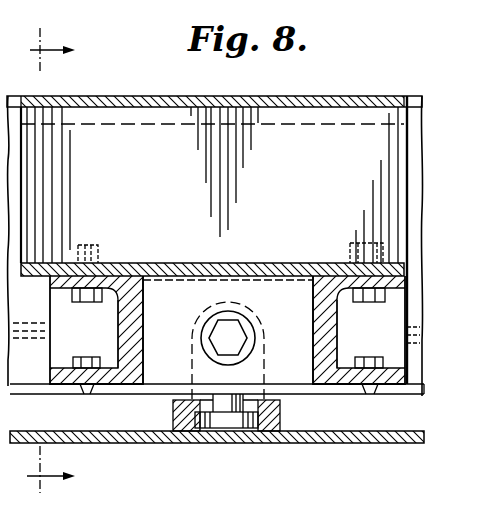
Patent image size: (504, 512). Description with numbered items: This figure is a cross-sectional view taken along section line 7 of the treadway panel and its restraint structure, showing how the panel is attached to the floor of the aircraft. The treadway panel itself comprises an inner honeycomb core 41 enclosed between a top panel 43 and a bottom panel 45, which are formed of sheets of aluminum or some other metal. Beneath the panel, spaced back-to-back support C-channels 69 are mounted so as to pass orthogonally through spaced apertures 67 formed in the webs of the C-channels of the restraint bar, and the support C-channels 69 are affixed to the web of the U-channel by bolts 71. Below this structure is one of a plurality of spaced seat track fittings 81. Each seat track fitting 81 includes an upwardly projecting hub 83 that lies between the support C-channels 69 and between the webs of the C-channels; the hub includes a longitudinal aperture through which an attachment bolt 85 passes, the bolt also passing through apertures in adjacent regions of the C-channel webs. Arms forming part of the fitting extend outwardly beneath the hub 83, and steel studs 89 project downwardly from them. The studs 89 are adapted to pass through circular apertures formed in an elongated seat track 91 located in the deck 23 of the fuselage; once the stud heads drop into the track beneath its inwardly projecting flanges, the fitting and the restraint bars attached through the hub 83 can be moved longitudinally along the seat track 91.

The section line 7- 7 is at (51, 263).
The deck 23 is at (88, 431).
The inner honeycomb core 41 is at (205, 134).
The top panel 43 is at (100, 98).
The bottom panel 45 is at (36, 278).
The apertures 67 is at (53, 347).
The support C-channels 69 is at (143, 320).
The bolts 71 is at (71, 301).
The seat track fitting 81 is at (164, 415).
The hub 83 is at (185, 355).
The attachment bolt 85 is at (232, 338).
The steel studs 89 is at (226, 443).
The seat tracks 91 is at (271, 444).